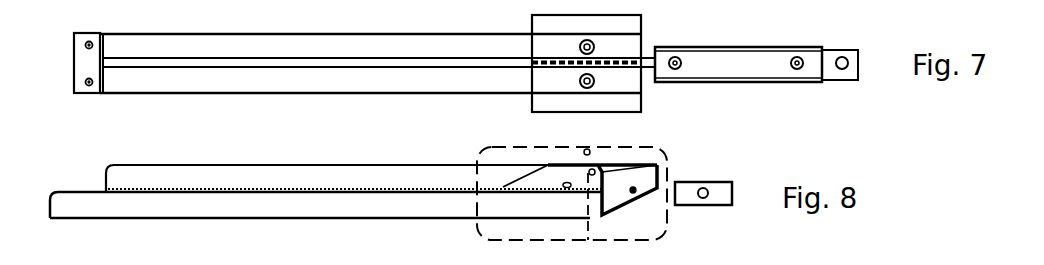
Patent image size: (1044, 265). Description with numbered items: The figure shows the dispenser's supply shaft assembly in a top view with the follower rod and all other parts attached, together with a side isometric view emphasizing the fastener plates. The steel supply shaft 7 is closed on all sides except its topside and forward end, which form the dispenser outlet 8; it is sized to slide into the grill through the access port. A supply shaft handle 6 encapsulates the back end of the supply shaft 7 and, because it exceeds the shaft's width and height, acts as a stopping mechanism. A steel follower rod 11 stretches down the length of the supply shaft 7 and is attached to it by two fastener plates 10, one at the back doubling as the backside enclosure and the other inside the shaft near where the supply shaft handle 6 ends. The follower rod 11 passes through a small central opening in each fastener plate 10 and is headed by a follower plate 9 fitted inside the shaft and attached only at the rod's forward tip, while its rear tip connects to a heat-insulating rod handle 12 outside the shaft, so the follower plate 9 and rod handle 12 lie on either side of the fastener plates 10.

In FIG. 7, the supply shaft handle 6 is at (622, 98).
In FIG. 7, the supply shaft 7 is at (248, 50).
In FIG. 8, the supply shaft 7 is at (342, 180).
In FIG. 7, the dispenser outlet 8 is at (80, 80).
In FIG. 8, the dispenser outlet 8 is at (104, 190).
In FIG. 7, the follower plate 9 is at (106, 33).
In FIG. 8, the fastener plates 10 is at (640, 193).
In FIG. 7, the follower rod 11 is at (350, 68).
In FIG. 7, the rod handle 12 is at (748, 63).